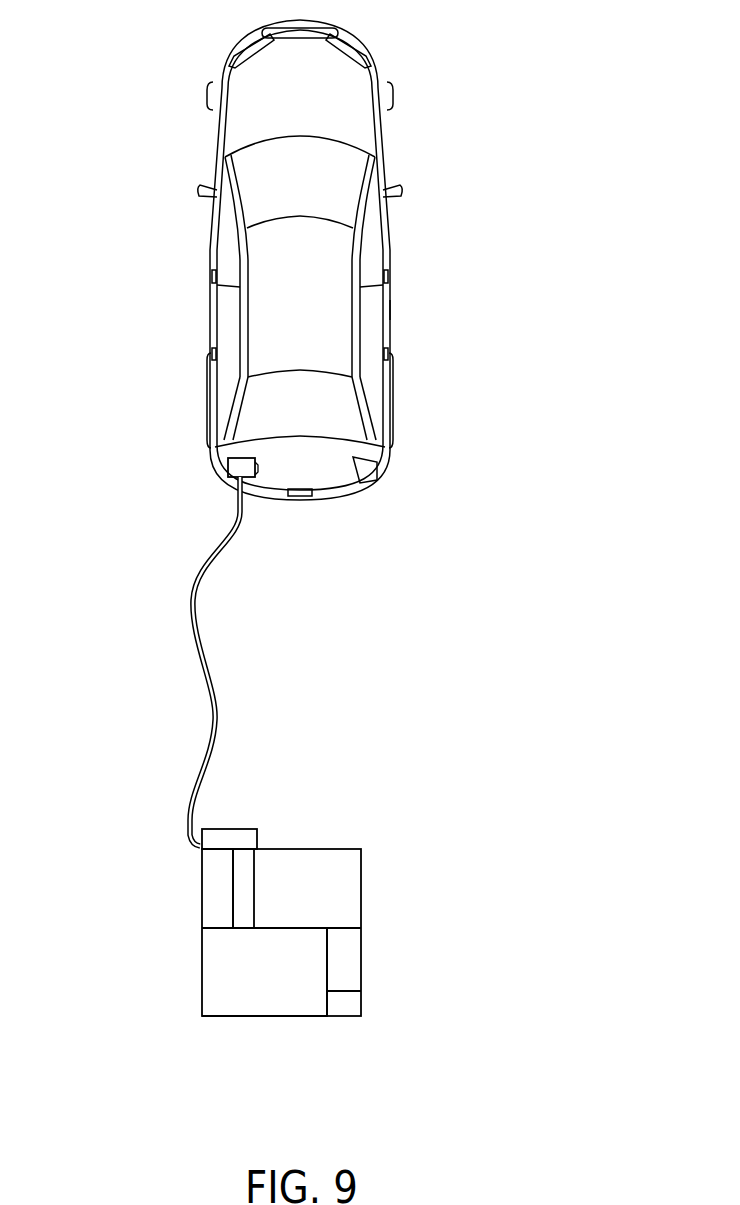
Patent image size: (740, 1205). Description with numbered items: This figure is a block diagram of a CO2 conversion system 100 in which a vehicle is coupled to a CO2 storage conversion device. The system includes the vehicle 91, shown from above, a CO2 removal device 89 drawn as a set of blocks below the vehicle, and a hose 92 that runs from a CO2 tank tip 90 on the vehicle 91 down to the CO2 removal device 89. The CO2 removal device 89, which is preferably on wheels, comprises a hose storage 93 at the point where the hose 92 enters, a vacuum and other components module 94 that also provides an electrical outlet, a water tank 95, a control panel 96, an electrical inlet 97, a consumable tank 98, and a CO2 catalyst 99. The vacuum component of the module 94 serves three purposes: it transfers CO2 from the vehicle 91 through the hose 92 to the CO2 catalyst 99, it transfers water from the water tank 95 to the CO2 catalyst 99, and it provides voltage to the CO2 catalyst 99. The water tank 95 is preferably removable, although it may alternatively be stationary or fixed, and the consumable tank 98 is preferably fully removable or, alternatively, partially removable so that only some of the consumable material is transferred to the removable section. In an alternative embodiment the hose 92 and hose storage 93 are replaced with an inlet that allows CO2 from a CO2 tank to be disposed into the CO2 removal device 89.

The CO2 conversion system 100 is at (537, 100).
The vehicle 91 is at (393, 314).
The CO2 tank tip 90 is at (228, 468).
The hose 92 is at (218, 700).
The CO2 removal device 89 is at (93, 883).
The hose storage 93 is at (235, 837).
The vacuum and other components module 94 is at (247, 872).
The water tank 95 is at (348, 868).
The control panel 96 is at (348, 957).
The electrical inlet 97 is at (348, 1007).
The consumable tank 98 is at (207, 968).
The CO2 catalyst 99 is at (207, 873).